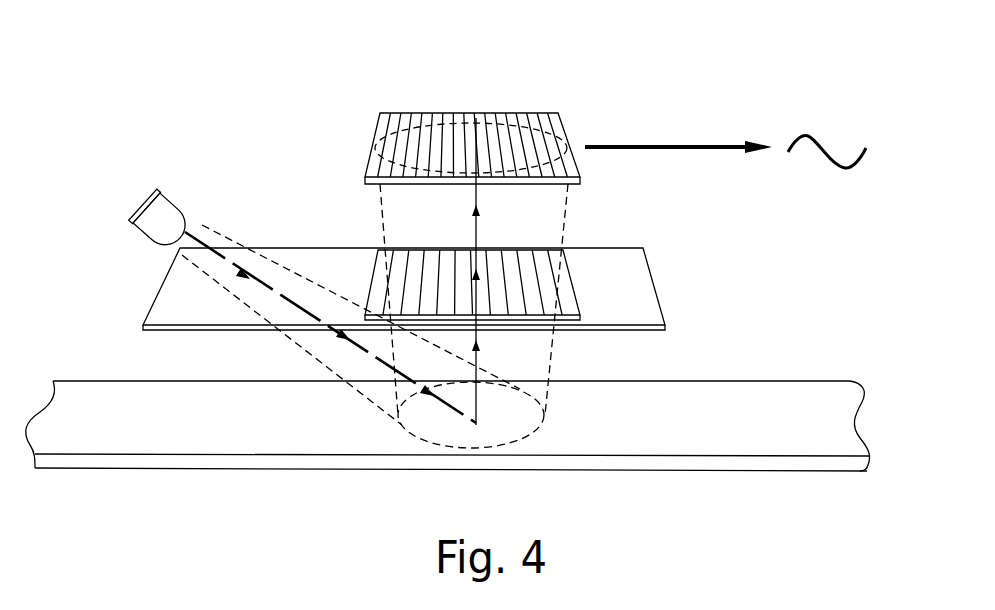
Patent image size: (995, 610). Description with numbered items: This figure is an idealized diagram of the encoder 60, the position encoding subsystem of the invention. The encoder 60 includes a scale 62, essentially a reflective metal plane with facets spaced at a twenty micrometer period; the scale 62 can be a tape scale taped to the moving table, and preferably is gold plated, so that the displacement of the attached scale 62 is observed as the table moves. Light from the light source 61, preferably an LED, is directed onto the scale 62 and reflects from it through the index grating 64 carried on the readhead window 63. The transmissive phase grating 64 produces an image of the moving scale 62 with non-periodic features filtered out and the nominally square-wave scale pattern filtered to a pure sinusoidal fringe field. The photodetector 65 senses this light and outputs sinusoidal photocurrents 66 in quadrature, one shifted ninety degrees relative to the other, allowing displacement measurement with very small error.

The encoder 60 is at (244, 96).
The light source 61 is at (140, 203).
The scale 62 is at (787, 430).
The readhead window 63 is at (645, 300).
The index grating 64 is at (523, 285).
The photodetector 65 is at (553, 113).
The sinusoidal photocurrents 66 is at (824, 147).